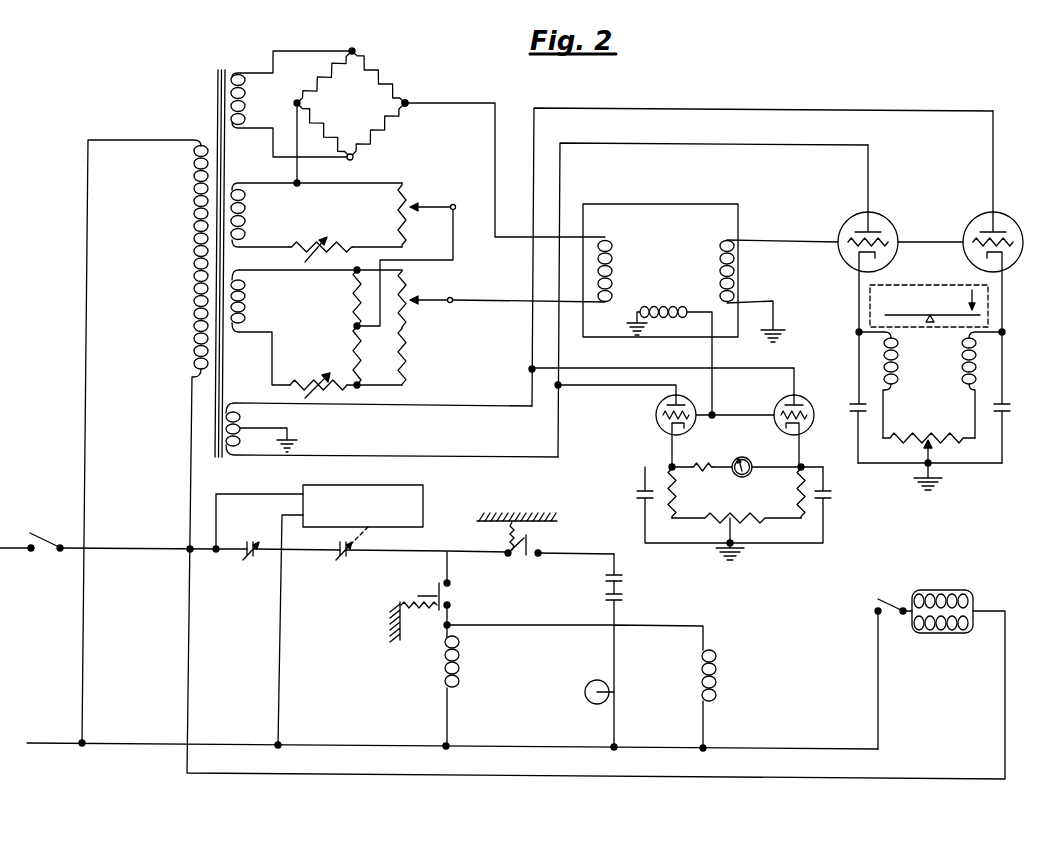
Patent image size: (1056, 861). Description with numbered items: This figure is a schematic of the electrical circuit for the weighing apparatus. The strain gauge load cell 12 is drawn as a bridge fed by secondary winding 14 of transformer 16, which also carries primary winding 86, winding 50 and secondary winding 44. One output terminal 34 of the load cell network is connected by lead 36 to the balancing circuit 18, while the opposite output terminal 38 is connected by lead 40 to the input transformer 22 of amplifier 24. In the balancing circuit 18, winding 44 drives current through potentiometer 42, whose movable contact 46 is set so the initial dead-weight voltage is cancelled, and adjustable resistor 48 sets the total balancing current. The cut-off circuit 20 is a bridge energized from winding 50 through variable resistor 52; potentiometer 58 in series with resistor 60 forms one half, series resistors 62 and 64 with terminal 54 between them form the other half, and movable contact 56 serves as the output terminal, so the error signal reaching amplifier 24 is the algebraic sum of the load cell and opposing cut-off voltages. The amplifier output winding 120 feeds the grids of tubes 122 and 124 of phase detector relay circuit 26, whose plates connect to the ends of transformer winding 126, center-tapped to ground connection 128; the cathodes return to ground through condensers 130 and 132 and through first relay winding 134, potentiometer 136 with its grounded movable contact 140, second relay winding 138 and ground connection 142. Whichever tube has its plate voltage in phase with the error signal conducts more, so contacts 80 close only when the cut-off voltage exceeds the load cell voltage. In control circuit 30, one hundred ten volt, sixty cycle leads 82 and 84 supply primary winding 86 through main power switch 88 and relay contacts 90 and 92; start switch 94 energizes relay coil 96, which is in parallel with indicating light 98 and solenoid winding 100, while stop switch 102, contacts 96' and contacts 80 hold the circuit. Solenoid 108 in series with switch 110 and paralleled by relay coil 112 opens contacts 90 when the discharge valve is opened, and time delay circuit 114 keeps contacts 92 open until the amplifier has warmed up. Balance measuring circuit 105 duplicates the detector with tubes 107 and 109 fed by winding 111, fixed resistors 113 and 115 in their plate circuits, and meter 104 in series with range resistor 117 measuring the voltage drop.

The strain gauge load cell 12 is at (347, 81).
The secondary winding 14 is at (239, 72).
The transformer 16 is at (220, 72).
The balancing circuit 18 is at (319, 220).
The cut-off circuit 20 is at (297, 326).
The input transformer 22 is at (612, 247).
The amplifier 24 is at (604, 202).
The phase detector relay circuit 26 is at (942, 221).
The control circuit 30 is at (548, 658).
The output terminal 34 is at (296, 103).
The lead 36 is at (300, 182).
The output terminal 38 is at (407, 102).
The lead 40 is at (462, 103).
The potentiometer 42 is at (406, 205).
The secondary winding 44 is at (244, 228).
The movable contact 46 is at (440, 212).
The adjustable resistor 48 is at (324, 237).
The winding 50 is at (245, 300).
The variable resistor 52 is at (325, 380).
The terminal 54 is at (354, 326).
The movable contact 56 is at (450, 304).
The potentiometer 58 is at (406, 293).
The resistor 60 is at (406, 360).
The resistor 62 is at (353, 298).
The resistor 64 is at (354, 358).
The relay contacts 80 is at (992, 300).
The lead 82 is at (6, 547).
The lead 84 is at (42, 743).
The primary winding 86 is at (194, 223).
The main power switch 88 is at (40, 533).
The relay contacts 90 is at (246, 560).
The relay contacts 92 is at (338, 560).
The push button start switch 94 is at (455, 602).
The relay coil 96 is at (474, 685).
The contacts 96' is at (640, 583).
The indicating light 98 is at (590, 700).
The solenoid winding 100 is at (718, 666).
The push button stop switch 102 is at (542, 551).
The meter 104 is at (746, 458).
The balance measuring circuit 105 is at (775, 387).
The tube 107 is at (806, 404).
The solenoid 108 is at (950, 593).
The tube 109 is at (656, 412).
The switch 110 is at (880, 600).
The transformer winding 111 is at (665, 309).
The relay coil 112 is at (946, 633).
The fixed resistor 113 is at (797, 493).
The time delay circuit 114 is at (423, 492).
The fixed resistor 115 is at (676, 503).
The range resistor 117 is at (696, 462).
The transformer winding 120 is at (720, 248).
The electronic tube 122 is at (1006, 215).
The electronic tube 124 is at (870, 212).
The transformer winding 126 is at (228, 405).
The ground connection 128 is at (268, 428).
The condenser 130 is at (853, 412).
The condenser 132 is at (1005, 408).
The first relay winding 134 is at (898, 346).
The potentiometer 136 is at (914, 440).
The second relay winding 138 is at (960, 366).
The movable contact 140 is at (932, 462).
The ground connection 142 is at (924, 478).